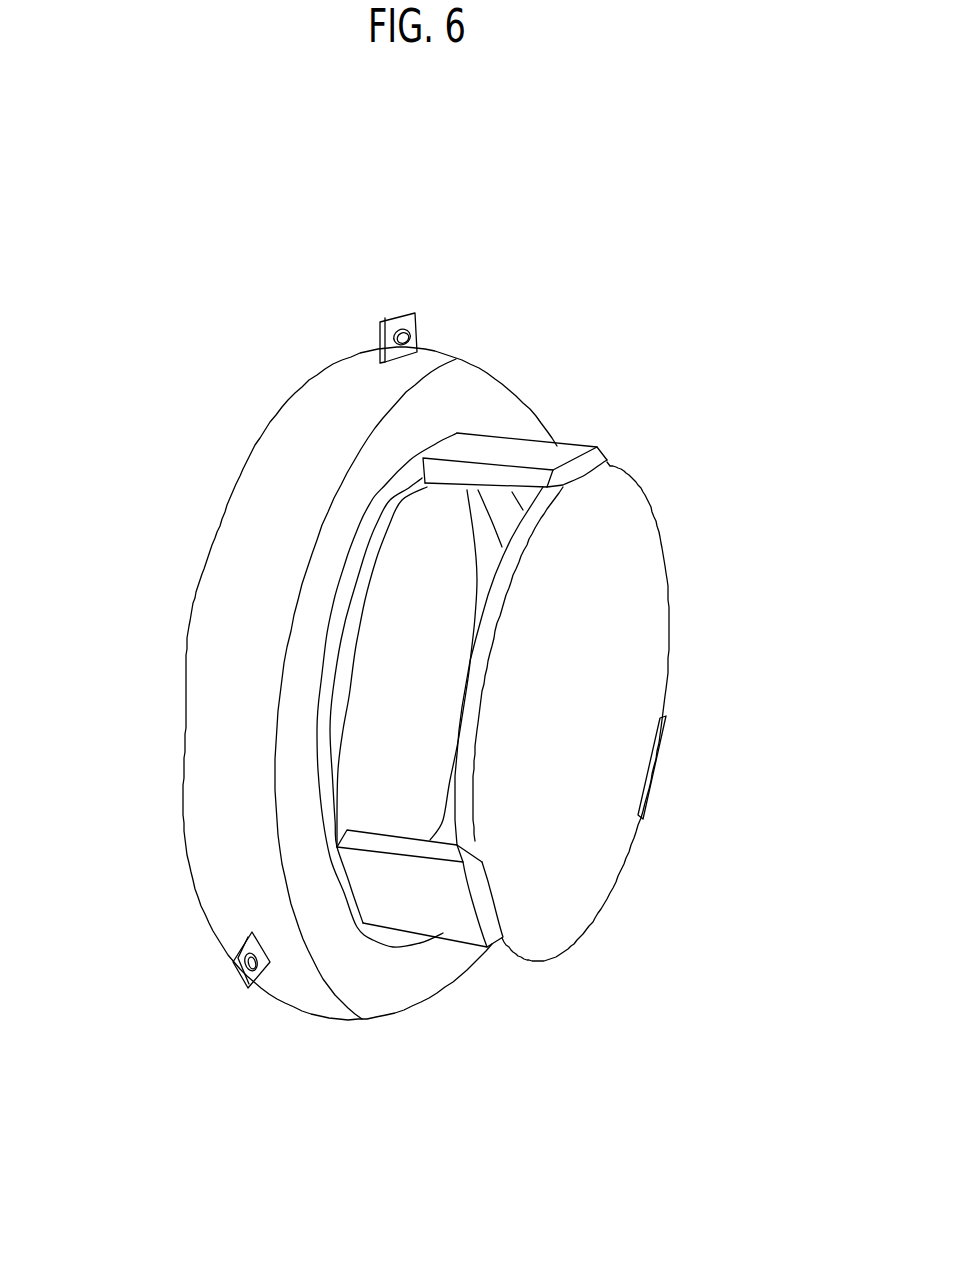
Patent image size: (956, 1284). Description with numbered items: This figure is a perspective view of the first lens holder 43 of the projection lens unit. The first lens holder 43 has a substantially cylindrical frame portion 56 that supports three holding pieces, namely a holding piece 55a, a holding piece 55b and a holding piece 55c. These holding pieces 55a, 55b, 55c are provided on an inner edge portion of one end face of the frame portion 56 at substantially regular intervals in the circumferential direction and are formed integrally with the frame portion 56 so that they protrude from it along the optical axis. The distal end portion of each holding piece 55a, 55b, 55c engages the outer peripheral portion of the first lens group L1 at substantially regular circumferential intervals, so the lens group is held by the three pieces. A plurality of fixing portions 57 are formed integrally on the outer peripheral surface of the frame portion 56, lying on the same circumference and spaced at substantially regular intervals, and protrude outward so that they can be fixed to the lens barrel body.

The first lens holder 43 is at (252, 316).
The frame portion 56 is at (233, 497).
The fixing portion 57 is at (398, 314).
The holding piece 55a is at (412, 915).
The holding piece 55b is at (660, 768).
The holding piece 55c is at (558, 443).
The first lens group L1 is at (588, 895).